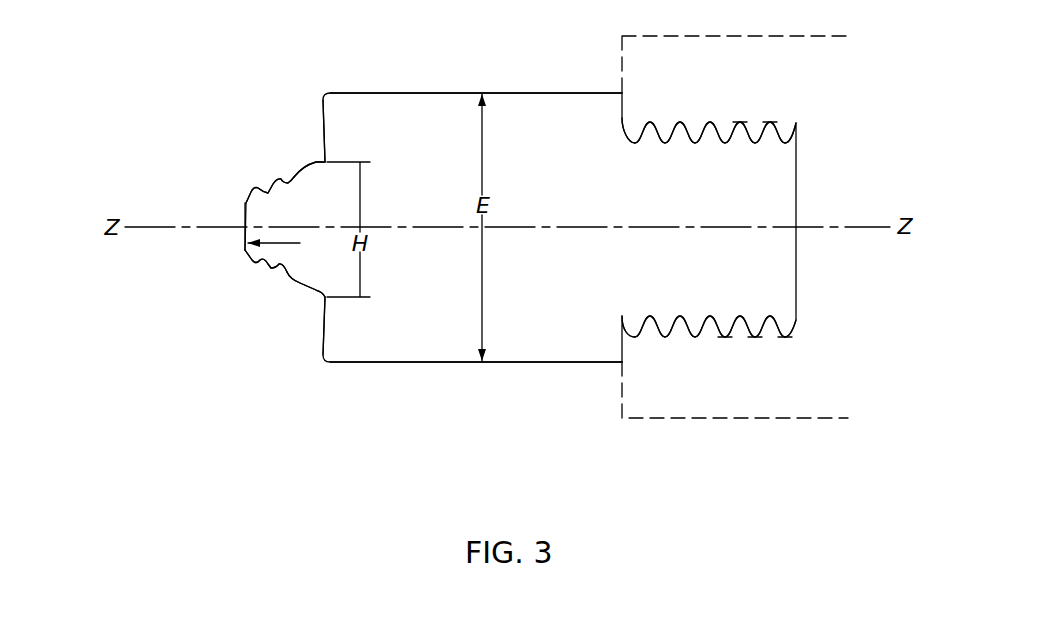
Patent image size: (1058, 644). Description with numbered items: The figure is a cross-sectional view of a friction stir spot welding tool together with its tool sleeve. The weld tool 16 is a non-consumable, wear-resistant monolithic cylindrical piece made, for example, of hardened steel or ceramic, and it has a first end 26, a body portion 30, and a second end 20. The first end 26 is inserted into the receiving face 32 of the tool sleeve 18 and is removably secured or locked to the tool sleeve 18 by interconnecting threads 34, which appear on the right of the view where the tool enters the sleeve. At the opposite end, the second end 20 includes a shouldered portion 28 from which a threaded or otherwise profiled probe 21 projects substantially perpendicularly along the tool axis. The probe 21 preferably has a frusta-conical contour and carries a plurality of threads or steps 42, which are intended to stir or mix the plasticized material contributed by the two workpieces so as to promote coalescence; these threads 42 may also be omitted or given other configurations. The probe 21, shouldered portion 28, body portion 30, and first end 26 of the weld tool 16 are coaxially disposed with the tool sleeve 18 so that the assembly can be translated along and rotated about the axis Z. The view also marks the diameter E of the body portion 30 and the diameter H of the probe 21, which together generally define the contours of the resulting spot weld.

The weld tool 16 is at (529, 61).
The tool sleeve 18 is at (808, 418).
The second end 20 is at (238, 164).
The probe 21 is at (253, 233).
The first end 26 is at (709, 89).
The shouldered portion 28 is at (322, 119).
The body portion 30 is at (446, 83).
The receiving face 32 is at (606, 379).
The interconnecting threads 34 is at (740, 122).
The threads 42 is at (266, 267).